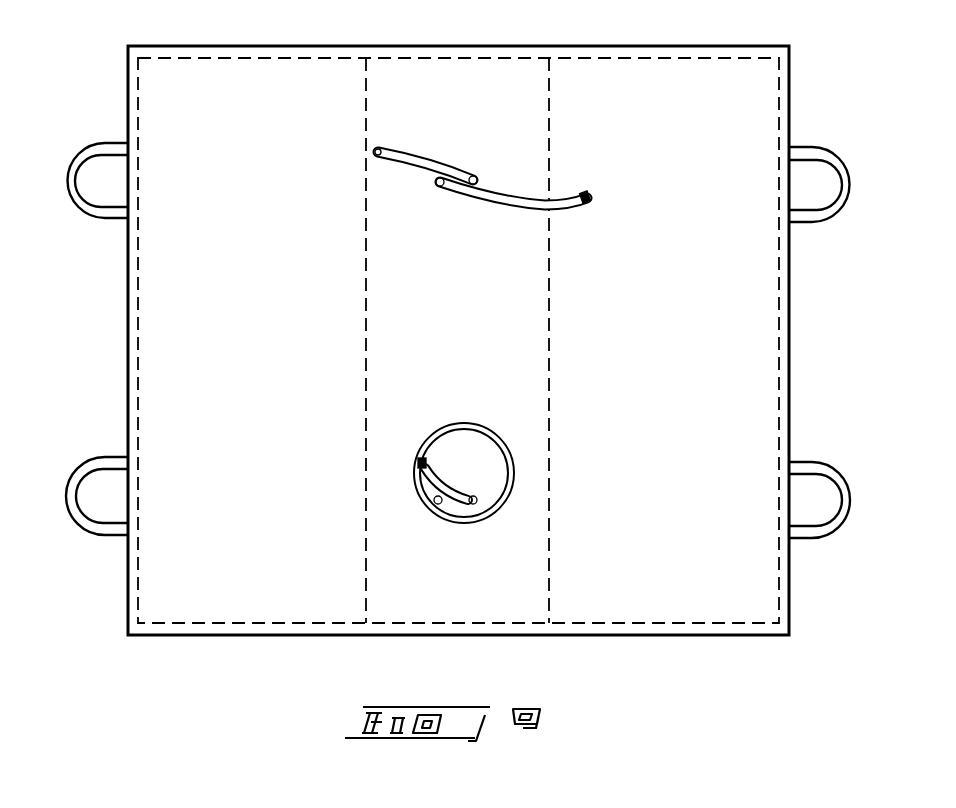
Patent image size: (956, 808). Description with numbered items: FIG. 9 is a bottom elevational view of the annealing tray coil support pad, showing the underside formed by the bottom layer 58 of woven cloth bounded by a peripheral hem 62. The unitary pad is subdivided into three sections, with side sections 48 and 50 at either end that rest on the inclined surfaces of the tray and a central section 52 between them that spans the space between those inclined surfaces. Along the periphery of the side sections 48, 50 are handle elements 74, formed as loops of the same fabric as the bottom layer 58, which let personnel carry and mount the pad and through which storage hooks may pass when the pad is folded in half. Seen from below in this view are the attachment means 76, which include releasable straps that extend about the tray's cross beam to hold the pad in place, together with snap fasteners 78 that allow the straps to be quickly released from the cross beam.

The side section 48 is at (262, 68).
The central section 52 is at (447, 78).
The side section 50 is at (634, 77).
The bottom layer 58 is at (664, 397).
The peripheral hem 62 is at (138, 80).
The handle elements 74 is at (103, 217).
The attachment means 76 is at (478, 412).
The snap fasteners 78 is at (473, 176).